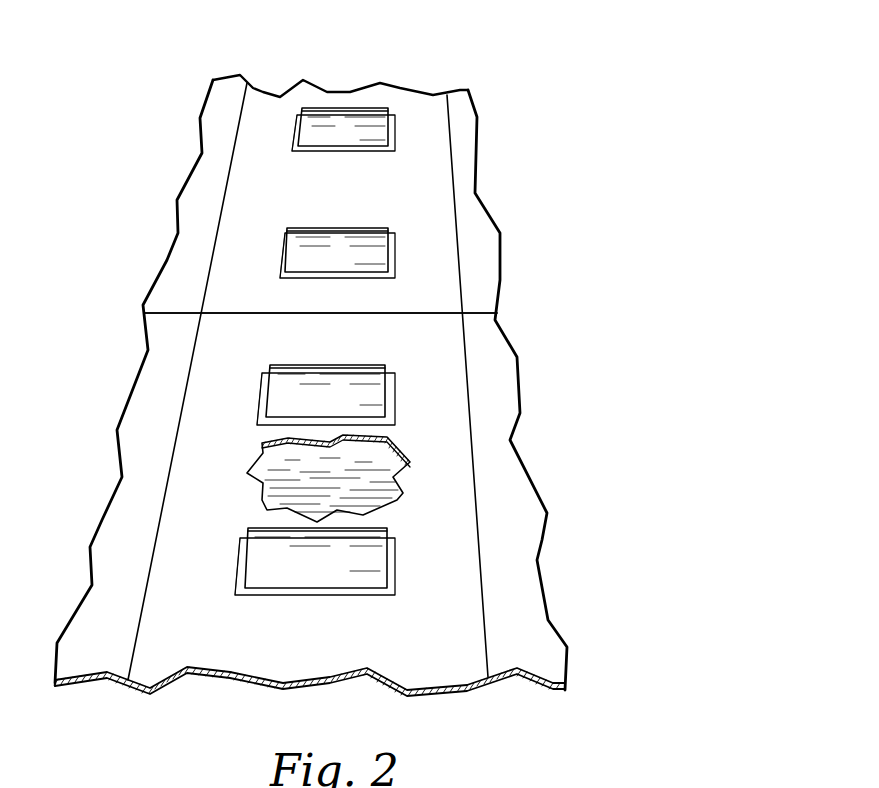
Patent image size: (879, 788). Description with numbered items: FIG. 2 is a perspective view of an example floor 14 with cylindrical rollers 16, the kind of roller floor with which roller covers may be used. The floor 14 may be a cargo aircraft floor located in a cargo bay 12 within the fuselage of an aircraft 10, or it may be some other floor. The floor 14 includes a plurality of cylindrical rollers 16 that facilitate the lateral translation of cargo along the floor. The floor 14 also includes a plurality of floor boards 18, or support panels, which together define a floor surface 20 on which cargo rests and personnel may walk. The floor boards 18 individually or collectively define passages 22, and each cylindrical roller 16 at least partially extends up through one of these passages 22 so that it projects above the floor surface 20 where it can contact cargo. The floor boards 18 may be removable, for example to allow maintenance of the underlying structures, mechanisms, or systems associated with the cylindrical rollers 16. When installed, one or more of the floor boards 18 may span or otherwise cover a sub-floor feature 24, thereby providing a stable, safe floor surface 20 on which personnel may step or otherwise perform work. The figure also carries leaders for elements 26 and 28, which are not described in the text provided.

The aircraft 10 is at (675, 95).
The cargo bay 12 is at (595, 88).
The floor 14 is at (530, 73).
The cylindrical rollers 16 is at (360, 110).
The floor boards 18 is at (280, 98).
The floor surface 20 is at (241, 359).
The passages 22 is at (313, 150).
The sub-floor feature 24 is at (363, 475).
The second sheet 26 is at (672, 787).
The second package 28 is at (602, 787).